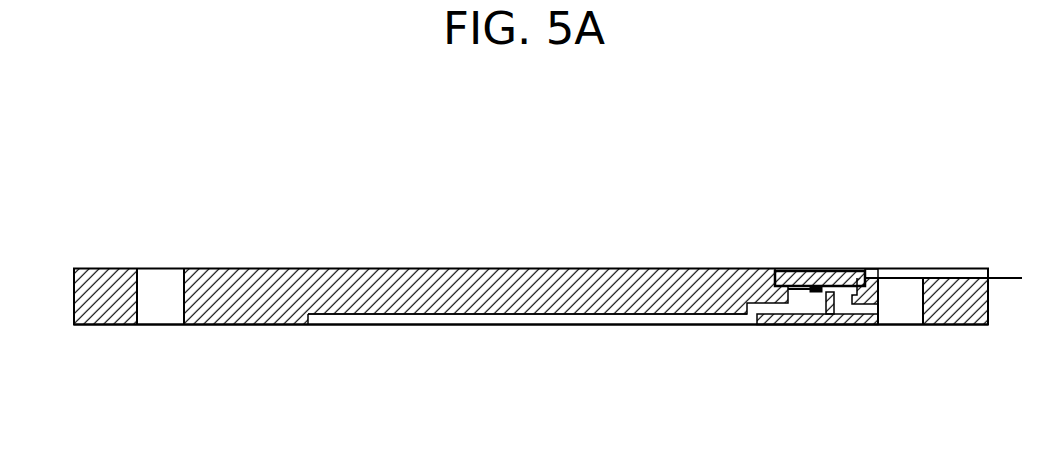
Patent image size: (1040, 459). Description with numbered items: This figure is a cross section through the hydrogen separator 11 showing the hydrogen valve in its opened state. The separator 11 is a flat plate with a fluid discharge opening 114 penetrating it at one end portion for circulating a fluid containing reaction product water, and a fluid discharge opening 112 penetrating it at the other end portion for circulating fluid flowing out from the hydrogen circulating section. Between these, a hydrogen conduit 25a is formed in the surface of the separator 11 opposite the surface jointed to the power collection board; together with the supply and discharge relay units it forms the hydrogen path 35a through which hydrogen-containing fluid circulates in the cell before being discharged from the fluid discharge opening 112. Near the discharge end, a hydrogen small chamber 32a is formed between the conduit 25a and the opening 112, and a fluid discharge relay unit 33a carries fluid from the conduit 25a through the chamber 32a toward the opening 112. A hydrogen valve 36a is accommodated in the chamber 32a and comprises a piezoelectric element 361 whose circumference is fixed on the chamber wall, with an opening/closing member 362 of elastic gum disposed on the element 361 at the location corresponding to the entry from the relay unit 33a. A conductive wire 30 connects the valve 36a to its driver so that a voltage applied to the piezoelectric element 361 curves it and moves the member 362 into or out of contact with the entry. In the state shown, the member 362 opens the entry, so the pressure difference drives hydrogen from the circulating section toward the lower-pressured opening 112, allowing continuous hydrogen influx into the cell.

The hydrogen separator 11 is at (557, 181).
The fluid discharge opening 114 is at (168, 312).
The hydrogen conduit 25a is at (547, 322).
The hydrogen path 35a is at (693, 322).
The hydrogen small chamber 32a is at (792, 271).
The piezoelectric element 361 is at (827, 271).
The hydrogen valve 36a is at (860, 270).
The conductive wire 30 is at (1010, 278).
The fluid discharge relay unit 33a is at (775, 305).
The opening/closing member 362 is at (830, 292).
The fluid discharge opening 112 is at (902, 308).